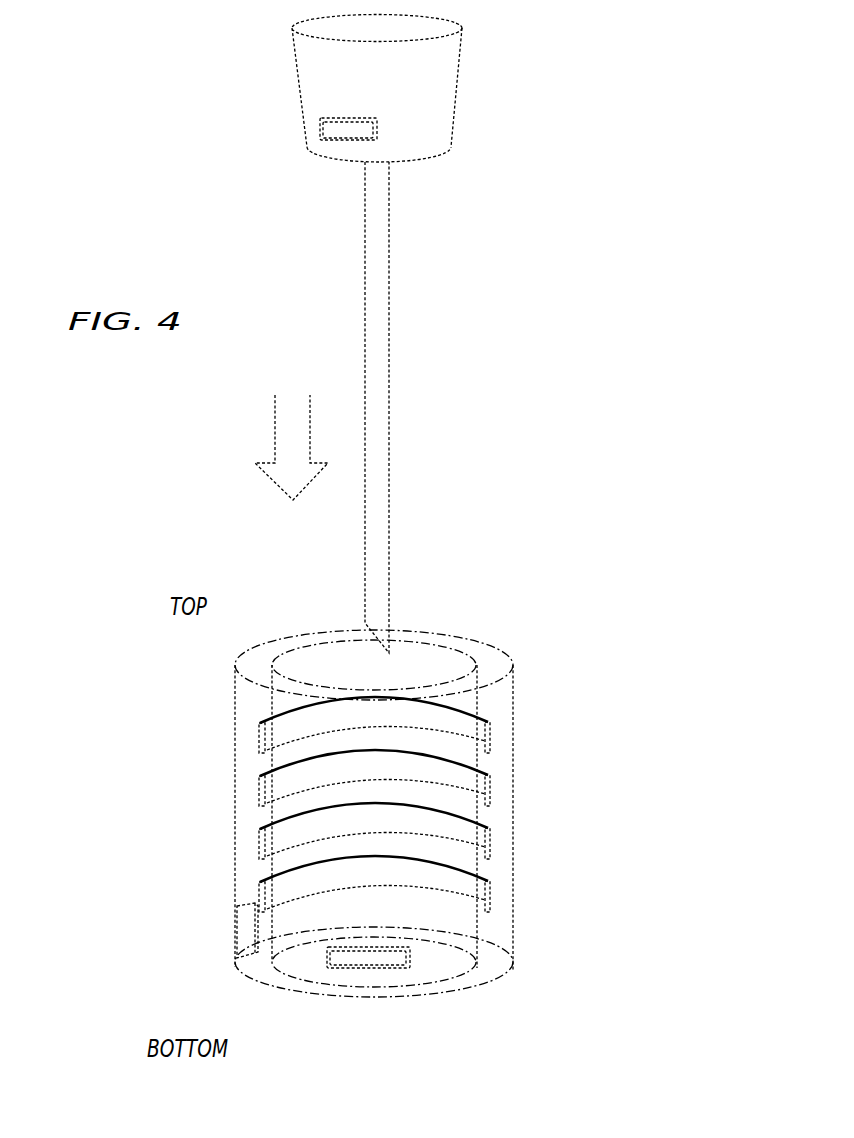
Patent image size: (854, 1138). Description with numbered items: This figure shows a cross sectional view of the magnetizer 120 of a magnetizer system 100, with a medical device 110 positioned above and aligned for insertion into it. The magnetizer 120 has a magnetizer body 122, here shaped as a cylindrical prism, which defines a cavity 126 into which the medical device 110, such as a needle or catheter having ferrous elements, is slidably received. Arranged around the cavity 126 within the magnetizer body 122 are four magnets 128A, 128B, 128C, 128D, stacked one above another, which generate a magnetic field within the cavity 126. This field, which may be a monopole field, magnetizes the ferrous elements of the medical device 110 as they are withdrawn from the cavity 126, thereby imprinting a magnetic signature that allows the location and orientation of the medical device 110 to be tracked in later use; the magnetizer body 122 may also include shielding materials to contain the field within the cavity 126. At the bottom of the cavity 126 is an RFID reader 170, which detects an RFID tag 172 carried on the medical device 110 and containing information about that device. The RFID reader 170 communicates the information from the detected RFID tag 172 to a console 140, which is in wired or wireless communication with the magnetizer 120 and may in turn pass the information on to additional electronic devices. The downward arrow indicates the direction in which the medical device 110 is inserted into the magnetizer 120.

The magnetizer system 100 is at (592, 348).
The medical device 110 is at (389, 233).
The magnetizer 120 is at (480, 627).
The magnetizer body 122 is at (490, 673).
The cavity 126 is at (467, 942).
The magnet 128A is at (490, 740).
The magnet 128B is at (490, 793).
The magnet 128C is at (490, 846).
The magnet 128D is at (490, 897).
The console 140 is at (248, 930).
The RFID reader 170 is at (372, 968).
The RFID tag 172 is at (340, 130).